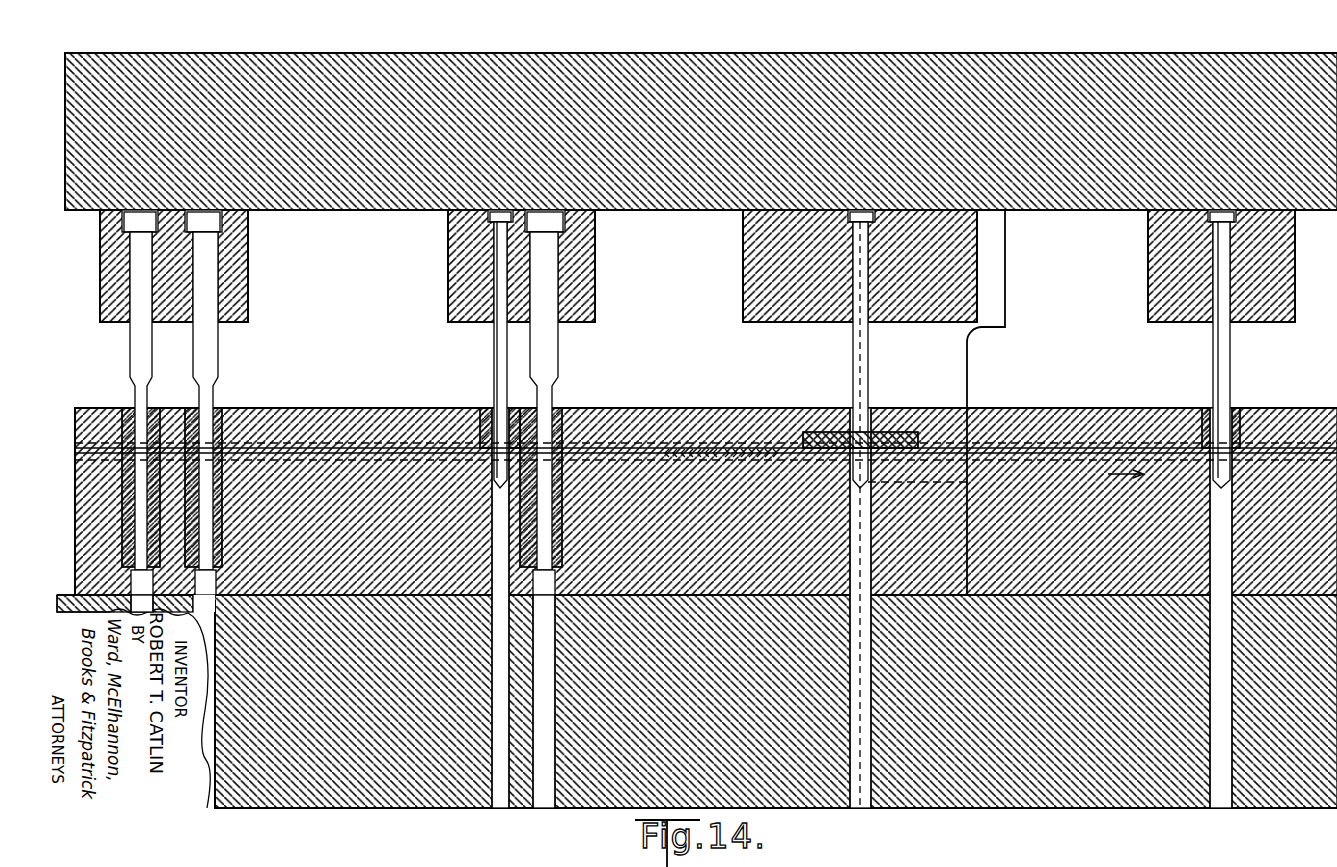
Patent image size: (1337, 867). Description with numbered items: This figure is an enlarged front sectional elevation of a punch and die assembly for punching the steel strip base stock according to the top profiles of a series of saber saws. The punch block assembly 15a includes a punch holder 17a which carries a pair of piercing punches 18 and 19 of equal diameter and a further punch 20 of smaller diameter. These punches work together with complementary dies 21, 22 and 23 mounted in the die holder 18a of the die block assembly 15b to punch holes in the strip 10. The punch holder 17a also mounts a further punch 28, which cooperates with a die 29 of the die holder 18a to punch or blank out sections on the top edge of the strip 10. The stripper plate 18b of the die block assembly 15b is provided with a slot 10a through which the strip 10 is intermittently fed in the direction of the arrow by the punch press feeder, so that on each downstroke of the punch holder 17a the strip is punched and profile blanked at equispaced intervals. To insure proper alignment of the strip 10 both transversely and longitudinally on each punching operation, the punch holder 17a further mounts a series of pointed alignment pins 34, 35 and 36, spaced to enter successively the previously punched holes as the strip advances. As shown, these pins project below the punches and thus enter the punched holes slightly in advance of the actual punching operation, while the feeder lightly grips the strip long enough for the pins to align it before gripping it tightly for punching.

The punch holder 17a is at (375, 66).
The punch block assembly 15a is at (1100, 275).
The die block assembly 15b is at (725, 608).
The piercing punch 18 is at (138, 340).
The piercing punch 19 is at (206, 351).
The punch 20 is at (558, 352).
The alignment pin 36 is at (494, 350).
The alignment pin 35 is at (852, 363).
The alignment pin 34 is at (1222, 390).
The stripper plate 18b is at (325, 406).
The die holder 18a is at (341, 577).
The die 21 is at (128, 518).
The die 22 is at (215, 520).
The die 23 is at (557, 525).
The strip 10 is at (720, 407).
The slot 10a is at (650, 407).
The punch 28 is at (935, 383).
The die 29 is at (955, 520).